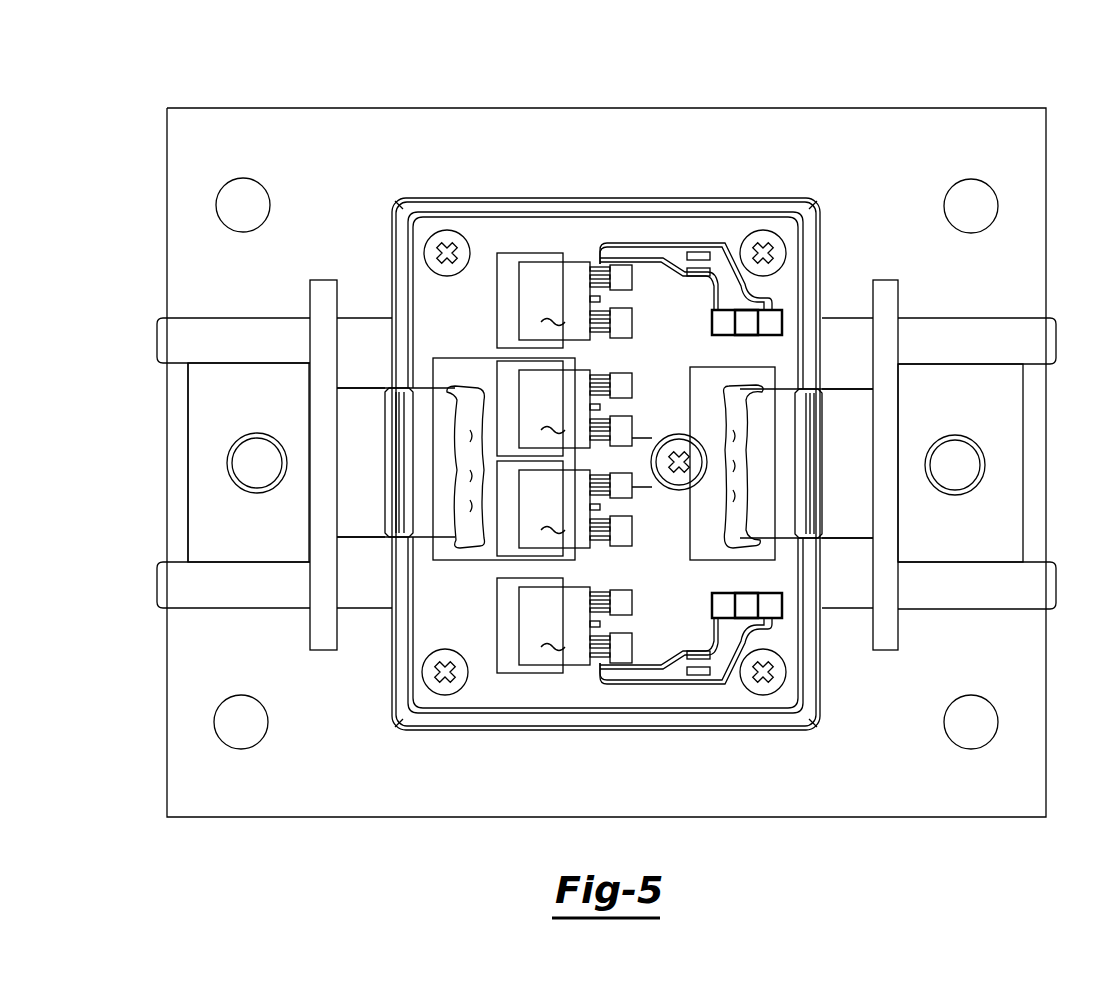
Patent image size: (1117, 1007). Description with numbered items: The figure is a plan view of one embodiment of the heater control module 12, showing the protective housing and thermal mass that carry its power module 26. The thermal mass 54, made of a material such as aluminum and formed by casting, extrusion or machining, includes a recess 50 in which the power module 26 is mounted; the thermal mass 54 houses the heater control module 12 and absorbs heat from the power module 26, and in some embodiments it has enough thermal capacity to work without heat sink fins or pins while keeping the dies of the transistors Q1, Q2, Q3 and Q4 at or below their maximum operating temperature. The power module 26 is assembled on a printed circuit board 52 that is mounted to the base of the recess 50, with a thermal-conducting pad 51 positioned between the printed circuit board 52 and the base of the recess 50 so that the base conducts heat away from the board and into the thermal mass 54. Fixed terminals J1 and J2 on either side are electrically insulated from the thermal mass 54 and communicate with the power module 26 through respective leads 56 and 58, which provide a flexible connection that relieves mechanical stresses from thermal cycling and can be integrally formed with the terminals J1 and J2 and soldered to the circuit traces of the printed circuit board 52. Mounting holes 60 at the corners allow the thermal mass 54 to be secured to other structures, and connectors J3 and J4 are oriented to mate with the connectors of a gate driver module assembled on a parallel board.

The heater control module 12 is at (160, 82).
The thermal mass 54 is at (553, 148).
The mounting holes 60 is at (227, 201).
The terminal J1 is at (208, 418).
The terminal J2 is at (1005, 425).
The recess 50 is at (585, 207).
The thermal-conducting pad 51 is at (695, 210).
The printed circuit board 52 is at (480, 218).
The power module 26 is at (780, 196).
The lead 56 is at (355, 430).
The lead 58 is at (845, 433).
The transistor Q1 is at (564, 300).
The transistor Q2 is at (564, 408).
The transistor Q3 is at (564, 508).
The transistor Q4 is at (564, 625).
The connector J3 is at (712, 323).
The connector J4 is at (712, 605).